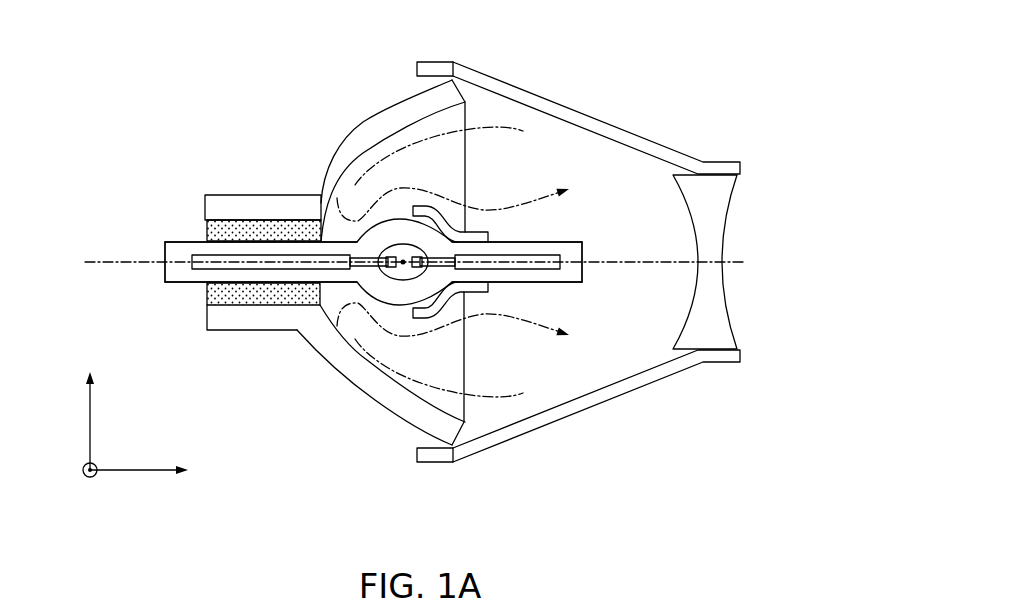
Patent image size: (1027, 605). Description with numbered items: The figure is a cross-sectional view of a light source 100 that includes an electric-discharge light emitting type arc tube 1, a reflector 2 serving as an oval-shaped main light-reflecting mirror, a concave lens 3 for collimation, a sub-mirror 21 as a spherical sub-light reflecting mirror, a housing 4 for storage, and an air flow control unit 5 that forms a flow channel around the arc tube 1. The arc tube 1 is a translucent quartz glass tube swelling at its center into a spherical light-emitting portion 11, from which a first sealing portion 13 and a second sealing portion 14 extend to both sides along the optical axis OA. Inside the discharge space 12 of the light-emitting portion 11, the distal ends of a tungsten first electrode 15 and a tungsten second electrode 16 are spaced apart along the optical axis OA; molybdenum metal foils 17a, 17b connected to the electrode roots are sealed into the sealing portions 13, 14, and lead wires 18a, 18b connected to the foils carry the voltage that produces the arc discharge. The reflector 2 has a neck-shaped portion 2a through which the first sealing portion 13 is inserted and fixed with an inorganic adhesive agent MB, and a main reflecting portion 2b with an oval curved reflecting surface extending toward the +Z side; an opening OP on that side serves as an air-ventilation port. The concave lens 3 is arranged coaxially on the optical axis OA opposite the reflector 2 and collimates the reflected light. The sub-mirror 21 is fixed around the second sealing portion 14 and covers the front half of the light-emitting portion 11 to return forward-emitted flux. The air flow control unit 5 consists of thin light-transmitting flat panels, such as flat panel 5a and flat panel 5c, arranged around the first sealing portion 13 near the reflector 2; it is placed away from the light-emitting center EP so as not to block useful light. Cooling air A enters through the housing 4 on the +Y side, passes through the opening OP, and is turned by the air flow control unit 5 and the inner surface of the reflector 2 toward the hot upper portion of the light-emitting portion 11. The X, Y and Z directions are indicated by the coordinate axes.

The light source 100 is at (650, 88).
The arc tube 1 is at (378, 233).
The reflector 2 is at (347, 251).
The neck-shaped portion 2a is at (223, 320).
The main reflecting portion 2b is at (355, 375).
The concave lens 3 is at (713, 285).
The housing 4 is at (577, 108).
The air flow control unit 5 is at (315, 195).
The flat panel 5a is at (322, 217).
The flat panel 5c is at (318, 312).
The light-emitting portion 11 is at (410, 268).
The discharge space 12 is at (403, 250).
The first sealing portion 13 is at (222, 250).
The second sealing portion 14 is at (518, 240).
The first electrode 15 is at (387, 233).
The second electrode 16 is at (403, 266).
The metal foil 17a is at (263, 255).
The metal foil 17b is at (540, 254).
The lead wire 18a is at (175, 262).
The lead wire 18b is at (583, 272).
The sub-mirror 21 is at (429, 206).
The inorganic adhesive agent MB is at (250, 240).
The opening OP is at (466, 163).
The light-emitting center EP is at (330, 318).
The optical axis OA is at (98, 268).
The cooling air A is at (587, 176).
The X direction X is at (89, 409).
The Y direction Y is at (76, 476).
The Z direction Z is at (150, 471).